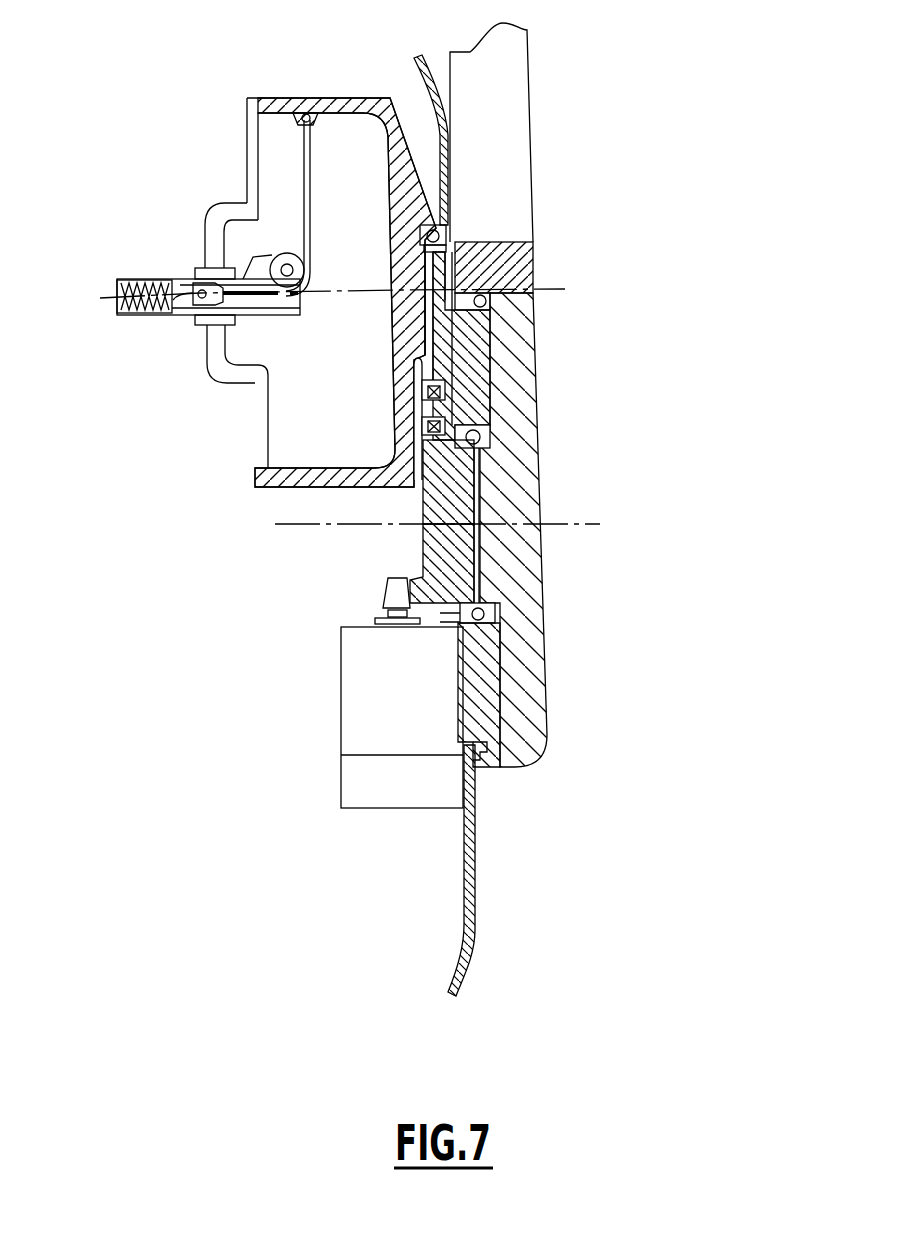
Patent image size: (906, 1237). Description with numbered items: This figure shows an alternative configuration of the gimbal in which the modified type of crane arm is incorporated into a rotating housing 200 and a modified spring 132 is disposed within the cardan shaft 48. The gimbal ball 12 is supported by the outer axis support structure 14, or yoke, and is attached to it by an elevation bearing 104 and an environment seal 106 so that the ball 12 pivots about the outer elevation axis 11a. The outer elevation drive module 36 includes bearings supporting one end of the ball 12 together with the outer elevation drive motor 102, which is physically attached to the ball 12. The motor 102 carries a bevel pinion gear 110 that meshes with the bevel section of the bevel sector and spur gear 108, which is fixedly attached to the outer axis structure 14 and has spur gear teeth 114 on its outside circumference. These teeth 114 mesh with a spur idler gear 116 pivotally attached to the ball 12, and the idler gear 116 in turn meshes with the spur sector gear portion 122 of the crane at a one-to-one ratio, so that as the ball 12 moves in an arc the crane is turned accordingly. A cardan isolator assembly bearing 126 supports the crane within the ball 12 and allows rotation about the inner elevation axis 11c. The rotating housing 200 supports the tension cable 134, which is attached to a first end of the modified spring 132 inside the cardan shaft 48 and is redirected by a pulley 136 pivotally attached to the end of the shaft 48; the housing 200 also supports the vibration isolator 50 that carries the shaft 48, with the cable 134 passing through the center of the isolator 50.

The rotating housing 200 is at (368, 97).
The vibration isolator 50 is at (207, 213).
The cardan shaft 48 is at (187, 262).
The modified spring 132 is at (147, 283).
The inner elevation axis 11c is at (110, 298).
The tension cable 134 is at (300, 152).
The pulley 136 is at (278, 253).
The gimbal ball 12 is at (425, 62).
The outer axis support structure 14 is at (532, 168).
The cardan isolator assembly bearing 126 is at (445, 231).
The environment seal 106 is at (480, 298).
The outer elevation drive module 36 is at (540, 412).
The spur sector gear portion 122 is at (397, 392).
The spur idler gear 116 is at (398, 424).
The spur gear teeth 114 is at (433, 487).
The outer elevation axis 11a is at (598, 522).
The bevel sector and spur gear 108 is at (495, 548).
The elevation bearing 104 is at (497, 627).
The bevel pinion gear 110 is at (385, 593).
The outer elevation drive motor 102 is at (338, 710).